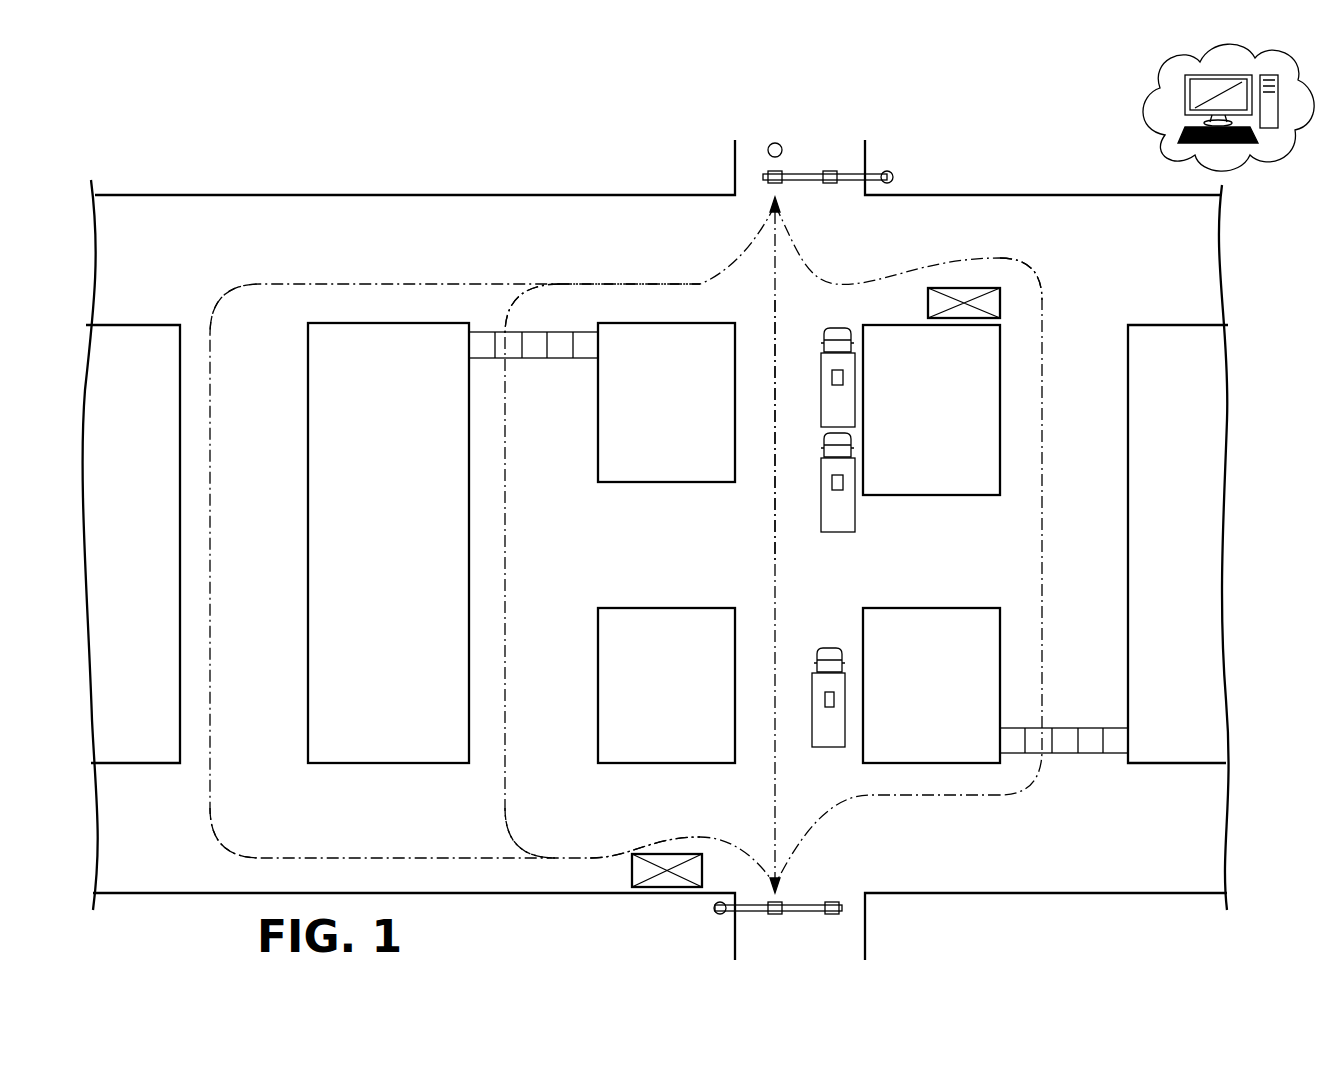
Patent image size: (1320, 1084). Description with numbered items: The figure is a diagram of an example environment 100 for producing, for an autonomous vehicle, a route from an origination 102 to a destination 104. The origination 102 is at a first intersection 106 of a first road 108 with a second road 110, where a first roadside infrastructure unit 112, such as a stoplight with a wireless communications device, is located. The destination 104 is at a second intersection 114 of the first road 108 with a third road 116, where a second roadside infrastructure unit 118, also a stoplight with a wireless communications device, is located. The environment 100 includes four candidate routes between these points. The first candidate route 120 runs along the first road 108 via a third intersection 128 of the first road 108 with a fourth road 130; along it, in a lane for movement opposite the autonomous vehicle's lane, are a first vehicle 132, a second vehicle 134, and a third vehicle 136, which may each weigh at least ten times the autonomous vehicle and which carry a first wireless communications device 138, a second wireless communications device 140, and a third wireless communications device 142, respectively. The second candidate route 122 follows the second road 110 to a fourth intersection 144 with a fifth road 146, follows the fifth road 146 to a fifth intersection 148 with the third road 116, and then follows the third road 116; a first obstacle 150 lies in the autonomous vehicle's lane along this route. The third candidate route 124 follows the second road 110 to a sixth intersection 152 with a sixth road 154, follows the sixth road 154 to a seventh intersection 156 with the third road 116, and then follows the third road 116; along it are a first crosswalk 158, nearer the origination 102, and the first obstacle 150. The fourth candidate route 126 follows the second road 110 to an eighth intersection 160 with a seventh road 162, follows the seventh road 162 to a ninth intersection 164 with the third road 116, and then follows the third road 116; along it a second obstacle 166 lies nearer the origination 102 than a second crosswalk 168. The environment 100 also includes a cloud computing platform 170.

The environment 100 is at (205, 132).
The origination 102 is at (780, 145).
The destination 104 is at (782, 940).
The first intersection 106 is at (815, 272).
The first road 108 is at (777, 412).
The second road 110 is at (645, 272).
The first roadside infrastructure unit 112 is at (895, 177).
The second intersection 114 is at (835, 838).
The third road 116 is at (687, 822).
The second roadside infrastructure unit 118 is at (720, 915).
The first candidate route 120 is at (773, 585).
The second candidate route 122 is at (212, 585).
The third candidate route 124 is at (506, 585).
The fourth candidate route 126 is at (1045, 585).
The third intersection 128 is at (823, 580).
The fourth road 130 is at (685, 557).
The first vehicle 132 is at (830, 330).
The second vehicle 134 is at (852, 440).
The third vehicle 136 is at (842, 668).
The first wireless communications device 138 is at (845, 378).
The second wireless communications device 140 is at (845, 482).
The third wireless communications device 142 is at (836, 695).
The fourth intersection 144 is at (247, 262).
The fifth road 146 is at (277, 412).
The fifth intersection 148 is at (250, 828).
The first obstacle 150 is at (632, 870).
The sixth intersection 152 is at (532, 268).
The sixth road 154 is at (570, 412).
The seventh intersection 156 is at (545, 828).
The first crosswalk 158 is at (538, 345).
The eighth intersection 160 is at (1070, 265).
The seventh road 162 is at (1103, 412).
The ninth intersection 164 is at (1085, 845).
The second obstacle 166 is at (928, 300).
The second crosswalk 168 is at (1068, 740).
The cloud computing platform 170 is at (1162, 75).